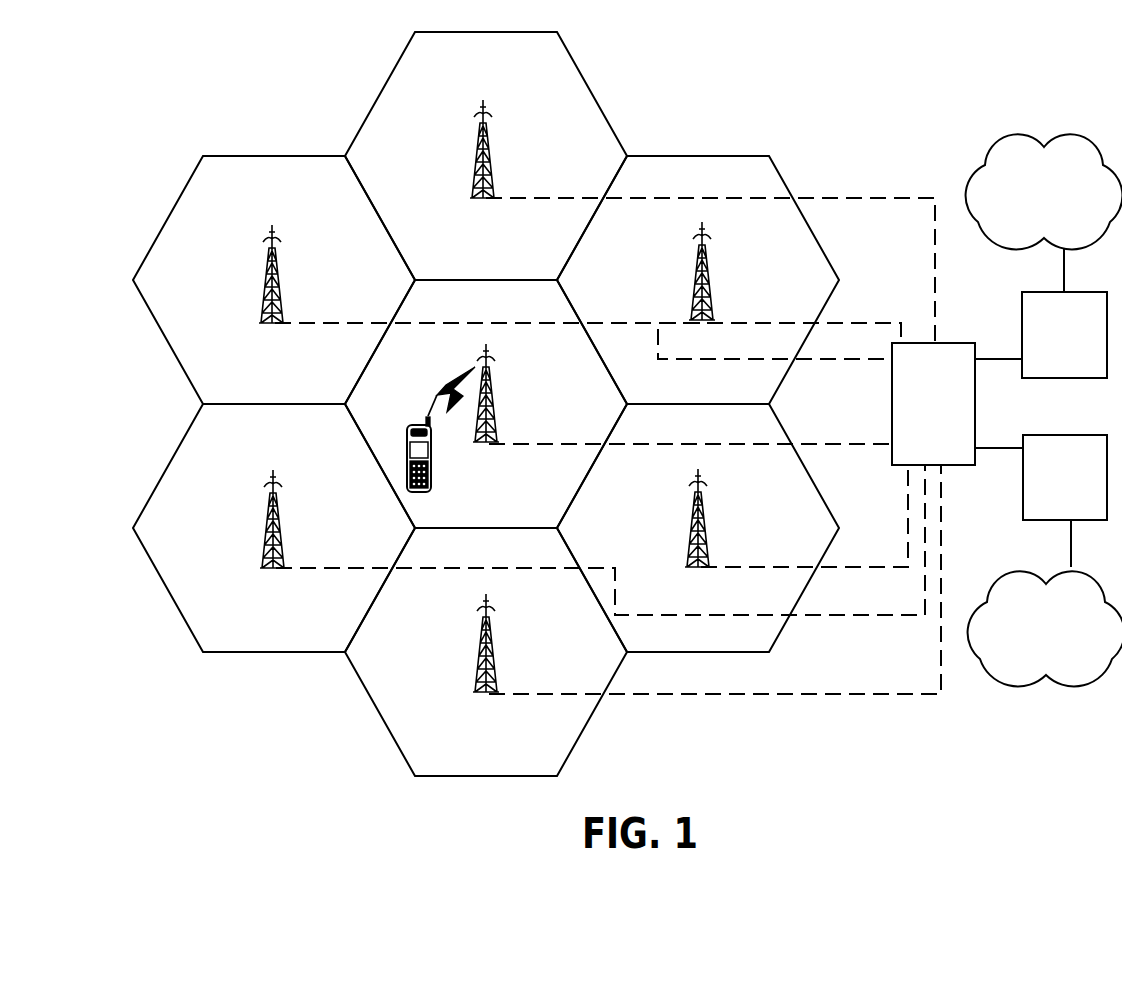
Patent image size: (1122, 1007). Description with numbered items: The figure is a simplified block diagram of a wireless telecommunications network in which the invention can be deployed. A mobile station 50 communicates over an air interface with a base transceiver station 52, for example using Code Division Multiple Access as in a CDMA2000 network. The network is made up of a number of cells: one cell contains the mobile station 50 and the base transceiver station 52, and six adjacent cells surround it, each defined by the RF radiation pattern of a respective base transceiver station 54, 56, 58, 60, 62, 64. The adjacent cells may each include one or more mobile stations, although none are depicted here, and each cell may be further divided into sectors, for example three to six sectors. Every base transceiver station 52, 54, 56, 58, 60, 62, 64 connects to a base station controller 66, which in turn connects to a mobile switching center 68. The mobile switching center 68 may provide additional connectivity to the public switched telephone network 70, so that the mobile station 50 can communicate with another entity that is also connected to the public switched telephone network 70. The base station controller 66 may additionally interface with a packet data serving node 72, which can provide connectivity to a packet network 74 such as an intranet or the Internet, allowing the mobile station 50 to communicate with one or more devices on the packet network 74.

The mobile station 50 is at (407, 453).
The base transceiver station 52 is at (494, 402).
The base transceiver station 54 is at (280, 283).
The base transceiver station 56 is at (281, 528).
The base transceiver station 58 is at (494, 652).
The base transceiver station 60 is at (706, 527).
The base transceiver station 62 is at (710, 280).
The base transceiver station 64 is at (491, 158).
The base station controller 66 is at (921, 435).
The mobile switching center 68 is at (1052, 367).
The public switched telephone network 70 is at (1032, 223).
The packet data serving node 72 is at (1053, 509).
The packet network 74 is at (1034, 669).